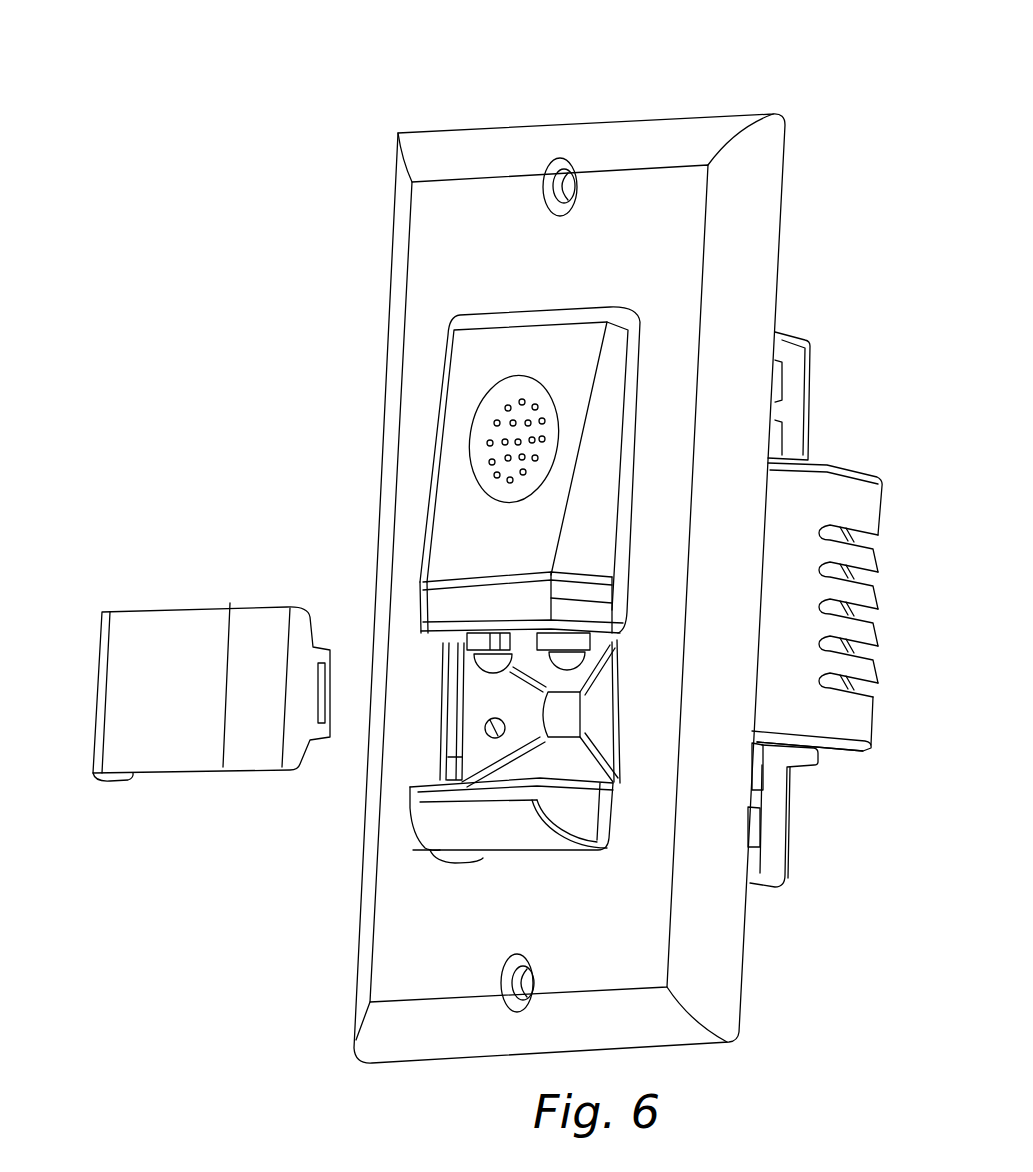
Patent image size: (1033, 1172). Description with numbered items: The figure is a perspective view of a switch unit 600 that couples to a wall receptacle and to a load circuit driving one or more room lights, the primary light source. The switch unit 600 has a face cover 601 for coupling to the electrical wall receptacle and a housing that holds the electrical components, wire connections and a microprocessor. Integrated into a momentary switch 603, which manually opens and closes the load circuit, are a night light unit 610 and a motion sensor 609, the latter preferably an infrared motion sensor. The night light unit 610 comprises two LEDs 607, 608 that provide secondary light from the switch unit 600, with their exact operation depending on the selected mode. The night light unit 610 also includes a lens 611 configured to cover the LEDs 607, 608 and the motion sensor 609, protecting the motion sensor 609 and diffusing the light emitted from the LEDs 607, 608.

The switch unit 600 is at (218, 78).
The face cover 601 is at (357, 963).
The momentary switch 603 is at (463, 342).
The LED 607 is at (490, 660).
The LED 608 is at (565, 662).
The motion sensor 609 is at (560, 717).
The night light unit 610 is at (67, 600).
The lens 611 is at (157, 778).